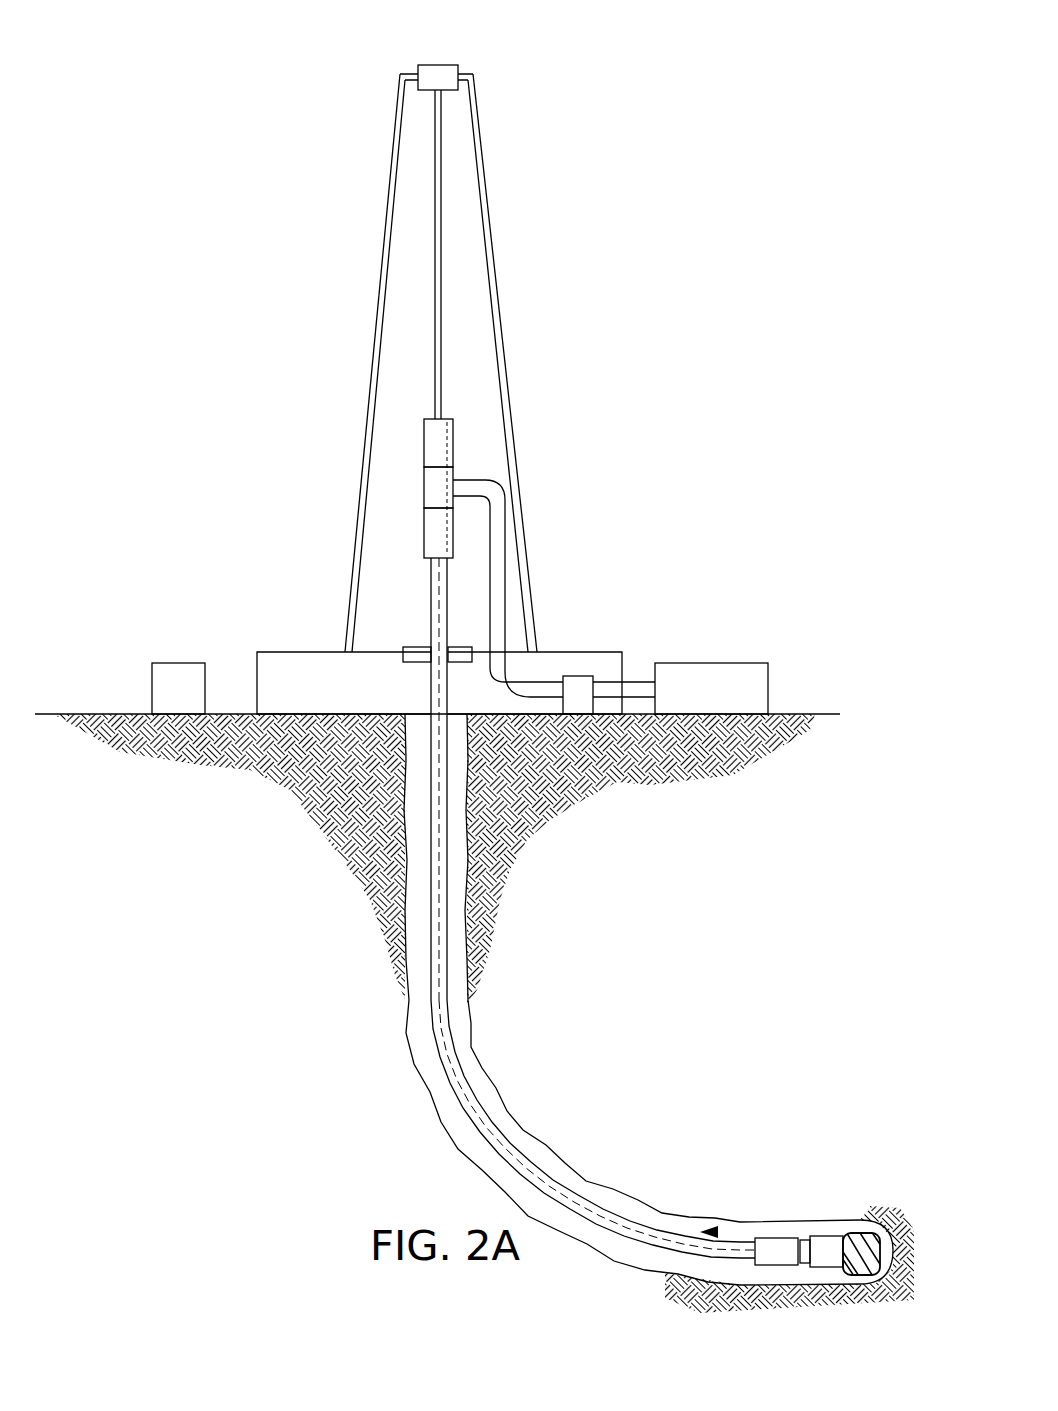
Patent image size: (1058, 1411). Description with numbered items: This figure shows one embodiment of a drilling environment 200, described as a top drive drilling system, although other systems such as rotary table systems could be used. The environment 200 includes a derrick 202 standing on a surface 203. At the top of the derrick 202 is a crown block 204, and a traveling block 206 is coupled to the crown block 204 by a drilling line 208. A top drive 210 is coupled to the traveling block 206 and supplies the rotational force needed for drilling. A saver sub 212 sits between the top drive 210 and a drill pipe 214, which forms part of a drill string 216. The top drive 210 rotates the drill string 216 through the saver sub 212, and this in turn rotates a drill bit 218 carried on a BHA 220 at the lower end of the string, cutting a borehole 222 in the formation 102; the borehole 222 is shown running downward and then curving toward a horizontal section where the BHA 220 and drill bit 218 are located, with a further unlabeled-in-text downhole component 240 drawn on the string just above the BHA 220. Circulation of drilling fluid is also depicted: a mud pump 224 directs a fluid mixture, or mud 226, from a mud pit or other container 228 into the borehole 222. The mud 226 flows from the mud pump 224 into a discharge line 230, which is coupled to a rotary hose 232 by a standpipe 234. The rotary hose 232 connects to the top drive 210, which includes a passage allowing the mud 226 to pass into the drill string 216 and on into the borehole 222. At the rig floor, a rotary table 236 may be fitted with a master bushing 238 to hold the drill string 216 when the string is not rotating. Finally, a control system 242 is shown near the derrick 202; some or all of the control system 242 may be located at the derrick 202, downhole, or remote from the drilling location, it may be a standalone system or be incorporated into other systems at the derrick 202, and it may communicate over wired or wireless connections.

The formation 102 is at (690, 943).
The drilling environment 200 is at (210, 100).
The derrick 202 is at (488, 187).
The surface 203 is at (103, 714).
The crown block 204 is at (423, 63).
The traveling block 206 is at (424, 443).
The drilling line 208 is at (435, 291).
The top drive 210 is at (424, 490).
The saver sub 212 is at (424, 536).
The drill pipe 214 is at (431, 578).
The drill string 216 is at (420, 998).
The drill bit 218 is at (867, 1233).
The BHA 220 is at (820, 1236).
The borehole 222 is at (468, 1020).
The mud pump 224 is at (582, 675).
The mud 226 is at (715, 1232).
The mud pit or other container 228 is at (710, 663).
The discharge line 230 is at (542, 682).
The rotary hose 232 is at (473, 480).
The standpipe 234 is at (508, 563).
The rotary table 236 is at (410, 647).
The master bushing 238 is at (410, 665).
The drill collar 240 is at (775, 1238).
The control system 242 is at (172, 662).